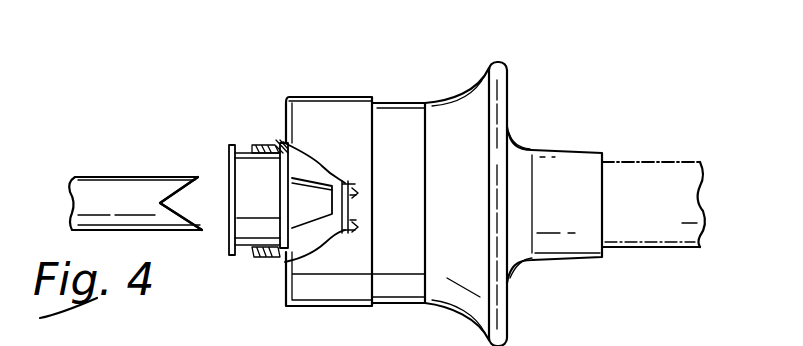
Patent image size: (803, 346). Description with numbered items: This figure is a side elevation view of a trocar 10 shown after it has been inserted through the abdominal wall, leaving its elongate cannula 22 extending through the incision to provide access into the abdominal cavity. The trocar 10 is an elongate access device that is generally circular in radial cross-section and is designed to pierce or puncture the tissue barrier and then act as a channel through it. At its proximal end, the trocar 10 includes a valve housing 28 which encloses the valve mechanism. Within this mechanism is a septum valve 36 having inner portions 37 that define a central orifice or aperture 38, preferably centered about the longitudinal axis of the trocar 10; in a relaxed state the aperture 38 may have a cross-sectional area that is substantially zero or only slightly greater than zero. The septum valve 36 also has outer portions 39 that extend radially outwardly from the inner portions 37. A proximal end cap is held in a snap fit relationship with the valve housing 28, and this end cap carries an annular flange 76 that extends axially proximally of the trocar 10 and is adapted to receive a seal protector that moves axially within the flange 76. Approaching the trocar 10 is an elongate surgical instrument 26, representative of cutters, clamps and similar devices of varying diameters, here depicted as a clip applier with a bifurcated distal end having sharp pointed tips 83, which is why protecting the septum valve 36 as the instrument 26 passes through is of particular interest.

The trocar 10 is at (310, 82).
The cannula 22 is at (637, 165).
The surgical instrument 26 is at (97, 180).
The valve housing 28 is at (405, 105).
The septum valve 36 is at (342, 182).
The inner portions 37 is at (359, 228).
The aperture 38 is at (350, 208).
The outer portions 39 is at (359, 194).
The annular flange 76 is at (262, 145).
The pointed tips 83 is at (198, 182).